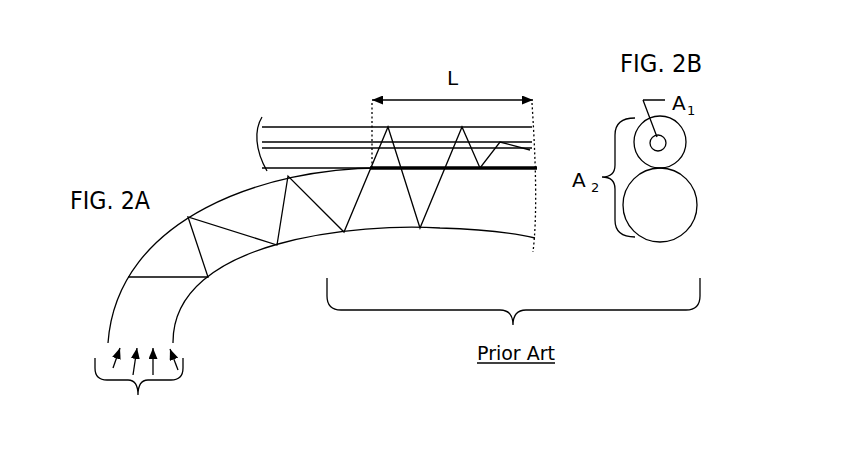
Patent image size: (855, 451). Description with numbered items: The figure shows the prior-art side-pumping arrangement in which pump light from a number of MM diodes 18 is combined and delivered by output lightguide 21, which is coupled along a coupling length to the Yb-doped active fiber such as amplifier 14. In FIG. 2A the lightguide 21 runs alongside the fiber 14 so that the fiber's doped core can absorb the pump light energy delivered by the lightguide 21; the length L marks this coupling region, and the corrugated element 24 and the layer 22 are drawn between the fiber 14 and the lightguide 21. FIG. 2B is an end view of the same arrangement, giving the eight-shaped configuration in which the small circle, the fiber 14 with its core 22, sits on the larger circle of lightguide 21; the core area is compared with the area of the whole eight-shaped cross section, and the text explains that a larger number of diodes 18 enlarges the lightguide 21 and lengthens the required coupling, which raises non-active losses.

In FIG. 2A, the amplifier 14 is at (518, 135).
In FIG. 2B, the amplifier 14 is at (645, 135).
In FIG. 2A, the MM diodes 18 is at (139, 386).
In FIG. 2A, the output lightguide 21 is at (163, 288).
In FIG. 2B, the output lightguide 21 is at (643, 220).
In FIG. 2A, the ply 22 is at (293, 145).
In FIG. 2B, the ply 22 is at (662, 140).
In FIG. 2A, the corrugated web 24 is at (423, 206).